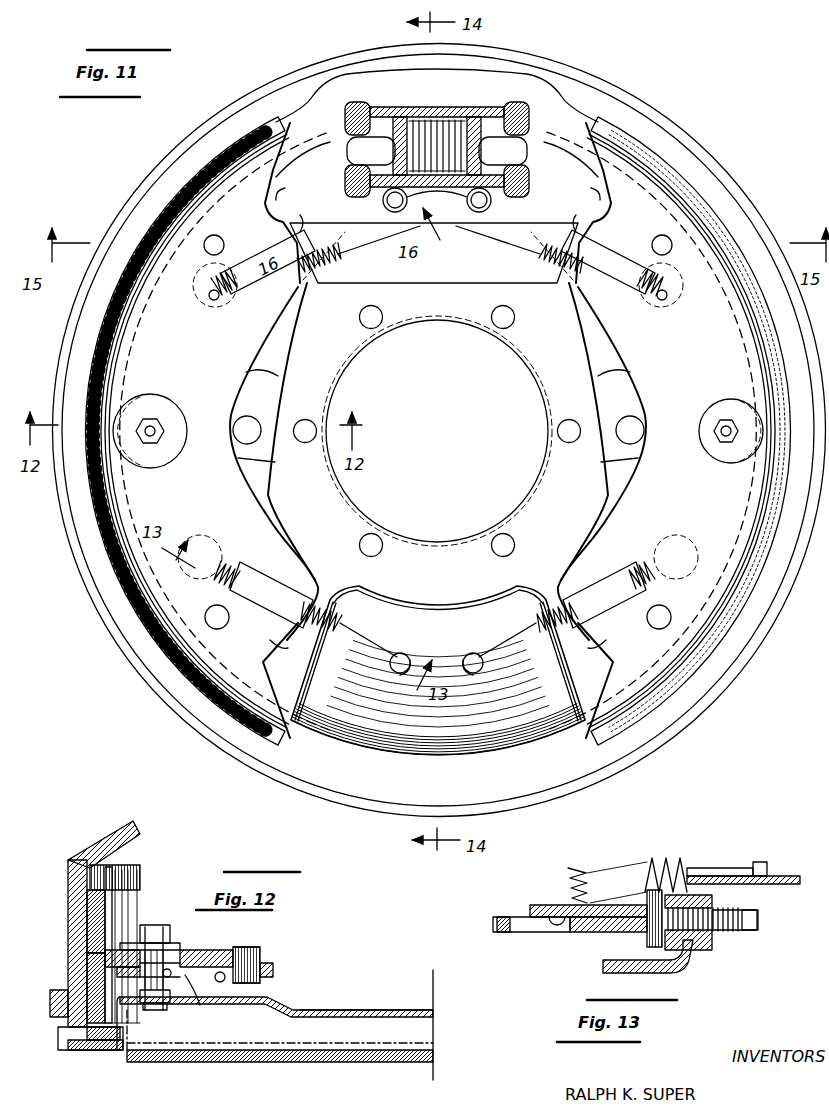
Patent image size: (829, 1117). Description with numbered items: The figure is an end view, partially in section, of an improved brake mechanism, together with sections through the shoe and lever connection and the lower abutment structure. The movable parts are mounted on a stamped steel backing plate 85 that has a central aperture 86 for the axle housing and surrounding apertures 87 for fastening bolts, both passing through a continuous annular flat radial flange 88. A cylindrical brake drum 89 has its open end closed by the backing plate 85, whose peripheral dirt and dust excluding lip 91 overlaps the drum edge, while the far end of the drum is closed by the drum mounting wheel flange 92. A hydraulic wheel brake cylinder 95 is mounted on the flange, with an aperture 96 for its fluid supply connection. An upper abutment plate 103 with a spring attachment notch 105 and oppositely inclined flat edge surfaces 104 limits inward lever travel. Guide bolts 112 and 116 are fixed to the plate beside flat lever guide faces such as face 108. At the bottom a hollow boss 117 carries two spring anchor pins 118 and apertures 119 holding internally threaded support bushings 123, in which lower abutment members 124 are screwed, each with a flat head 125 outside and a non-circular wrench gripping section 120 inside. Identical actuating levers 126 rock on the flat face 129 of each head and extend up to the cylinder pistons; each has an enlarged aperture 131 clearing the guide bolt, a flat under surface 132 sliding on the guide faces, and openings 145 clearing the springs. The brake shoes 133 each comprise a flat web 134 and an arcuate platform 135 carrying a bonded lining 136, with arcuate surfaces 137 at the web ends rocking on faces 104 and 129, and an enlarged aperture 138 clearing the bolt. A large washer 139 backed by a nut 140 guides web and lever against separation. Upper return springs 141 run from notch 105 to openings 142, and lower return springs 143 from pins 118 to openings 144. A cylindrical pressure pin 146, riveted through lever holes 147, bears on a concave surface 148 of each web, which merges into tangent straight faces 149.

In FIG. 11, the backing plate 85 is at (728, 168).
In FIG. 12, the backing plate 85 is at (238, 1064).
In FIG. 11, the central aperture 86 is at (437, 542).
In FIG. 12, the central aperture 86 is at (400, 1010).
In FIG. 11, the apertures 87 is at (498, 548).
In FIG. 11, the annular flat radial flange 88 is at (553, 316).
In FIG. 12, the annular flat radial flange 88 is at (302, 1008).
In FIG. 13, the annular flat radial flange 88 is at (640, 973).
In FIG. 12, the brake drum 89 is at (70, 906).
In FIG. 11, the dirt and dust excluding lip 91 is at (272, 105).
In FIG. 12, the dirt and dust excluding lip 91 is at (88, 1052).
In FIG. 12, the drum mounting wheel flange 92 is at (112, 830).
In FIG. 11, the hydraulic wheel brake cylinder 95 is at (496, 108).
In FIG. 11, the aperture 96 is at (436, 105).
In FIG. 11, the upper abutment plate 103 is at (449, 283).
In FIG. 11, the inclined flat edge surfaces 104 is at (598, 226).
In FIG. 11, the spring attachment notch 105 is at (437, 210).
In FIG. 12, the lever guide face 108 is at (170, 985).
In FIG. 11, the guide bolt 112 is at (156, 420).
In FIG. 12, the guide bolt 112 is at (156, 1007).
In FIG. 11, the guide bolt 116 is at (722, 420).
In FIG. 11, the hollow boss 117 is at (498, 752).
In FIG. 13, the hollow boss 117 is at (782, 876).
In FIG. 11, the spring anchor pins 118 is at (466, 650).
In FIG. 13, the spring anchor pins 118 is at (752, 864).
In FIG. 13, the apertures 119 is at (690, 900).
In FIG. 13, the wrench gripping section 120 is at (752, 910).
In FIG. 13, the support bushing 123 is at (696, 950).
In FIG. 13, the lower abutment member 124 is at (740, 932).
In FIG. 11, the flat head 125 is at (335, 590).
In FIG. 13, the flat head 125 is at (650, 940).
In FIG. 11, the actuating lever 126 is at (268, 485).
In FIG. 12, the actuating lever 126 is at (273, 972).
In FIG. 13, the actuating lever 126 is at (493, 920).
In FIG. 13, the flat face 129 is at (670, 866).
In FIG. 12, the enlarged aperture 131 is at (190, 985).
In FIG. 12, the flat under surface 132 is at (255, 956).
In FIG. 13, the flat under surface 132 is at (590, 932).
In FIG. 11, the brake shoe 133 is at (272, 352).
In FIG. 12, the brake shoe 133 is at (132, 922).
In FIG. 11, the flat web 134 is at (668, 381).
In FIG. 12, the flat web 134 is at (222, 950).
In FIG. 13, the flat web 134 is at (530, 905).
In FIG. 11, the arcuate platform 135 is at (150, 638).
In FIG. 12, the arcuate platform 135 is at (92, 987).
In FIG. 11, the bonded lining 136 is at (278, 752).
In FIG. 12, the bonded lining 136 is at (92, 937).
In FIG. 11, the arcuate surfaces 137 is at (443, 412).
In FIG. 11, the enlarged aperture 138 is at (150, 395).
In FIG. 12, the enlarged aperture 138 is at (178, 945).
In FIG. 11, the washer 139 is at (165, 433).
In FIG. 11, the nut 140 is at (165, 440).
In FIG. 12, the nut 140 is at (160, 930).
In FIG. 11, the upper return spring 141 is at (380, 228).
In FIG. 11, the opening 142 is at (208, 296).
In FIG. 11, the lower return spring 143 is at (262, 556).
In FIG. 13, the lower return spring 143 is at (580, 868).
In FIG. 11, the opening 144 is at (232, 566).
In FIG. 13, the opening 144 is at (553, 908).
In FIG. 11, the openings 145 is at (220, 308).
In FIG. 13, the openings 145 is at (520, 932).
In FIG. 11, the pressure pin 146 is at (262, 420).
In FIG. 12, the pressure pin 146 is at (270, 954).
In FIG. 12, the lever holes 147 is at (252, 978).
In FIG. 11, the concave surface 148 is at (255, 458).
In FIG. 11, the straight faces 149 is at (262, 373).